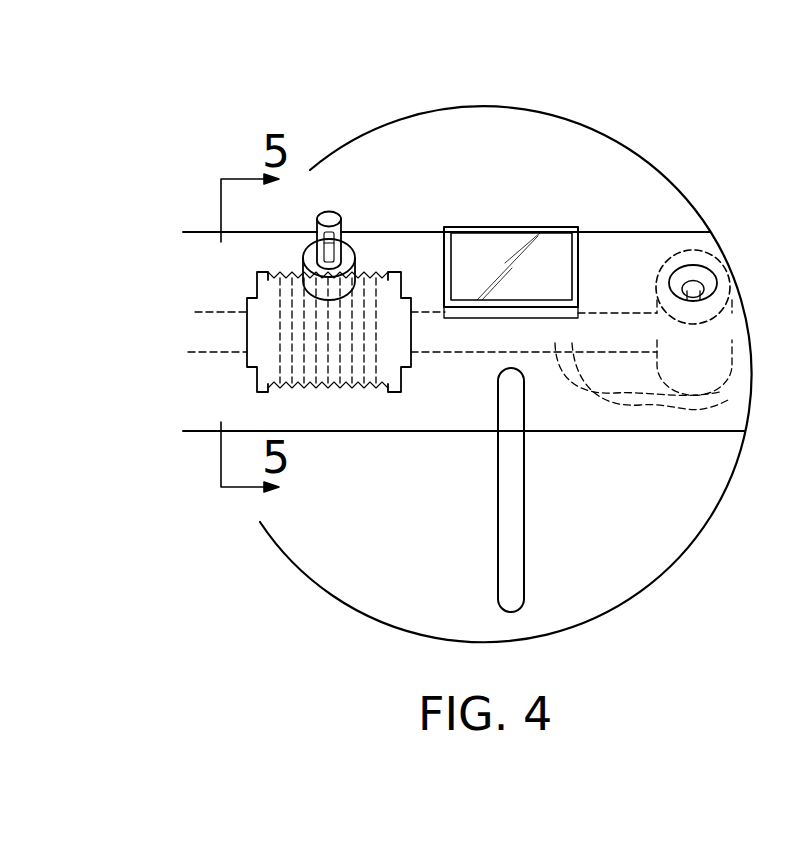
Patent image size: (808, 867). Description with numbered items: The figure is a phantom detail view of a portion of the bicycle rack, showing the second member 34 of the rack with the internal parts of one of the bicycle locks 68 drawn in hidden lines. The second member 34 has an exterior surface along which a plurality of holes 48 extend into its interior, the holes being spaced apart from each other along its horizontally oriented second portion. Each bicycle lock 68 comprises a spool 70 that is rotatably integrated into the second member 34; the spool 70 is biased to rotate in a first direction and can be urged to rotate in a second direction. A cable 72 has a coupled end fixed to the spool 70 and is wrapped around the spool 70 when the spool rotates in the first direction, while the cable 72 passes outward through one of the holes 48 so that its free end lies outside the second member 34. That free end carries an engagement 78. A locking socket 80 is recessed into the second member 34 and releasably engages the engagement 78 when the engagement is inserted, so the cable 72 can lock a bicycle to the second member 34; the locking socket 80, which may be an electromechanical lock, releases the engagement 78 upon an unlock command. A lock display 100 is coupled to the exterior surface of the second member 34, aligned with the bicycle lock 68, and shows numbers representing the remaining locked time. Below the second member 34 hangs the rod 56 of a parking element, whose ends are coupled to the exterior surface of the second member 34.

The second member 34 is at (402, 232).
The holes 48 is at (302, 284).
The rod 56 is at (524, 594).
The bicycle locks 68 is at (369, 411).
The spool 70 is at (243, 298).
The cable 72 is at (332, 378).
The engagement 78 is at (328, 212).
The locking socket 80 is at (660, 267).
The lock displays 100 is at (497, 247).